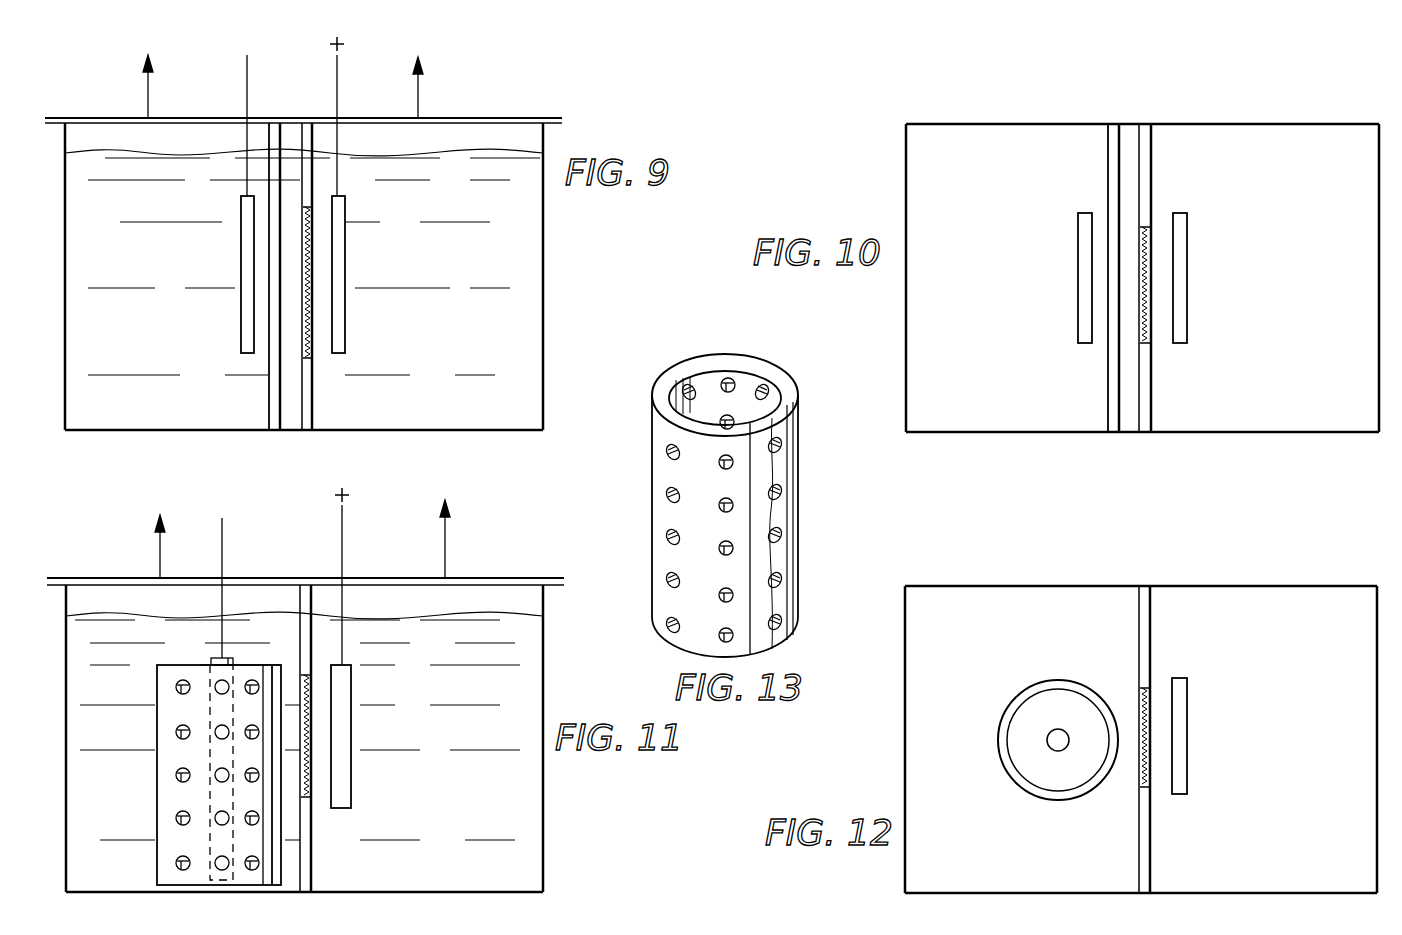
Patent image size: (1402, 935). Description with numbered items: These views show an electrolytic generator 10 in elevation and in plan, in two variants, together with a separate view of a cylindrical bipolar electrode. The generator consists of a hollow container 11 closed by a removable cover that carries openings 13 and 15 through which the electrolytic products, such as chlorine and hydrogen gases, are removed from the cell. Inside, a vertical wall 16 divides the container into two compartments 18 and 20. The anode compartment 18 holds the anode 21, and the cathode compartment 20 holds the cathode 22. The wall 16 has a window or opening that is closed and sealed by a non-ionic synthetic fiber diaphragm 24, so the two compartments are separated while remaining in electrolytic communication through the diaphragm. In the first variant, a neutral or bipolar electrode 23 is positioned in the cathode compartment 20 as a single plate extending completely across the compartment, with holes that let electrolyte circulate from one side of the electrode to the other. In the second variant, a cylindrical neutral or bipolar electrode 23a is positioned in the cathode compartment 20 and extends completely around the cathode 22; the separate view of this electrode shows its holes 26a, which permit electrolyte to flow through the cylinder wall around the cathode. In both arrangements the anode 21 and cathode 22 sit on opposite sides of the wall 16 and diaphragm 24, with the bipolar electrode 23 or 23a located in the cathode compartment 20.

In FIG. 9, the electrolytic generator 10 is at (549, 252).
In FIG. 10, the electrolytic generator 10 is at (897, 192).
In FIG. 11, the electrolytic generator 10 is at (546, 812).
In FIG. 12, the electrolytic generator 10 is at (894, 745).
In FIG. 9, the hollow container 11 is at (545, 330).
In FIG. 10, the hollow container 11 is at (946, 434).
In FIG. 11, the hollow container 11 is at (545, 863).
In FIG. 12, the hollow container 11 is at (905, 718).
In FIG. 9, the opening 13 is at (420, 118).
In FIG. 11, the opening 13 is at (466, 530).
In FIG. 9, the opening 15 is at (151, 118).
In FIG. 11, the opening 15 is at (163, 532).
In FIG. 9, the vertical wall 16 is at (313, 403).
In FIG. 10, the vertical wall 16 is at (1151, 399).
In FIG. 11, the vertical wall 16 is at (312, 873).
In FIG. 12, the vertical wall 16 is at (1151, 873).
In FIG. 9, the anode compartment 18 is at (500, 421).
In FIG. 10, the anode compartment 18 is at (1240, 420).
In FIG. 11, the anode compartment 18 is at (478, 888).
In FIG. 12, the anode compartment 18 is at (1278, 884).
In FIG. 9, the cathode compartment 20 is at (140, 421).
In FIG. 10, the cathode compartment 20 is at (990, 420).
In FIG. 11, the cathode compartment 20 is at (93, 875).
In FIG. 12, the cathode compartment 20 is at (980, 882).
In FIG. 9, the anode 21 is at (345, 262).
In FIG. 10, the anode 21 is at (1187, 288).
In FIG. 11, the anode 21 is at (352, 718).
In FIG. 12, the anode 21 is at (1187, 745).
In FIG. 9, the cathode 22 is at (241, 265).
In FIG. 10, the cathode 22 is at (1078, 290).
In FIG. 11, the cathode 22 is at (208, 660).
In FIG. 12, the cathode 22 is at (1058, 737).
In FIG. 9, the bipolar electrode 23 is at (269, 403).
In FIG. 10, the bipolar electrode 23 is at (1108, 387).
In FIG. 11, the cylindrical bipolar electrode 23a is at (186, 775).
In FIG. 12, the cylindrical bipolar electrode 23a is at (1020, 788).
In FIG. 13, the cylindrical bipolar electrode 23a is at (693, 505).
In FIG. 9, the diaphragm 24 is at (309, 347).
In FIG. 10, the diaphragm 24 is at (1148, 342).
In FIG. 11, the diaphragm 24 is at (308, 797).
In FIG. 12, the diaphragm 24 is at (1150, 787).
In FIG. 11, the holes 26a is at (175, 819).
In FIG. 13, the holes 26a is at (719, 594).